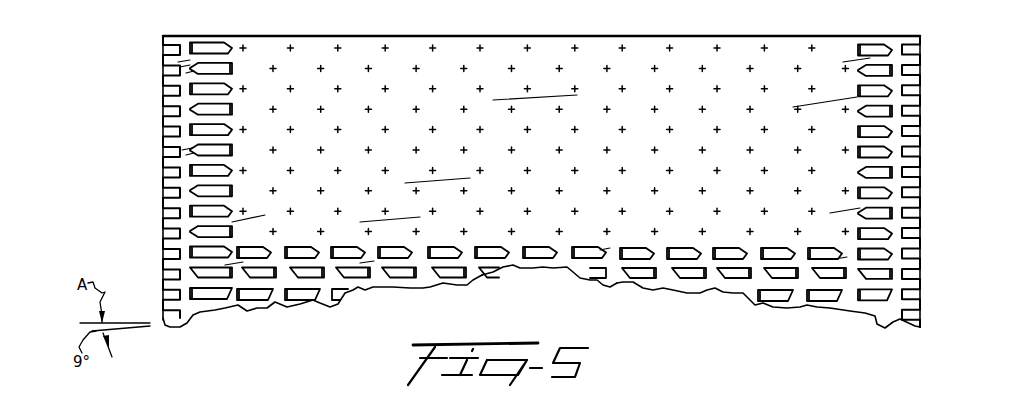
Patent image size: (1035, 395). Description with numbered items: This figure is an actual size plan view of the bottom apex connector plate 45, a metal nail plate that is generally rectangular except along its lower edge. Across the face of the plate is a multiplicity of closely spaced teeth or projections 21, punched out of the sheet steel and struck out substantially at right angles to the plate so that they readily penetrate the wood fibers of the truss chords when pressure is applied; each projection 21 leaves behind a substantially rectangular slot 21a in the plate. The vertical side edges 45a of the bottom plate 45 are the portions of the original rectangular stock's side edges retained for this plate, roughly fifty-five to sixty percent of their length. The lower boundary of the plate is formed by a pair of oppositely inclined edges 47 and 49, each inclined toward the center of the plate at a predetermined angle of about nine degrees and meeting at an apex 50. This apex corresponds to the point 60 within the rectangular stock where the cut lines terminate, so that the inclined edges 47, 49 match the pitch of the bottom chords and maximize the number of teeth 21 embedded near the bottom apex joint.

The teeth or projections 21 is at (196, 147).
The rectangular slot 21a is at (200, 145).
The bottom apex connector plate 45 is at (934, 201).
The side edges of the bottom plate 45a is at (151, 217).
The lower inclined edge 47 is at (408, 287).
The lower inclined edge 49 is at (689, 295).
The apex 50 is at (545, 270).
The point 60 is at (540, 262).